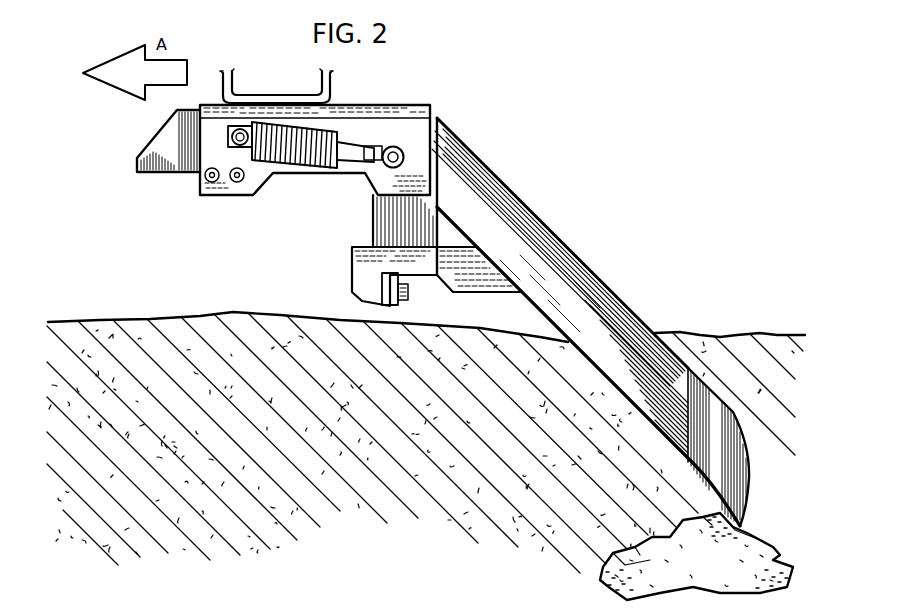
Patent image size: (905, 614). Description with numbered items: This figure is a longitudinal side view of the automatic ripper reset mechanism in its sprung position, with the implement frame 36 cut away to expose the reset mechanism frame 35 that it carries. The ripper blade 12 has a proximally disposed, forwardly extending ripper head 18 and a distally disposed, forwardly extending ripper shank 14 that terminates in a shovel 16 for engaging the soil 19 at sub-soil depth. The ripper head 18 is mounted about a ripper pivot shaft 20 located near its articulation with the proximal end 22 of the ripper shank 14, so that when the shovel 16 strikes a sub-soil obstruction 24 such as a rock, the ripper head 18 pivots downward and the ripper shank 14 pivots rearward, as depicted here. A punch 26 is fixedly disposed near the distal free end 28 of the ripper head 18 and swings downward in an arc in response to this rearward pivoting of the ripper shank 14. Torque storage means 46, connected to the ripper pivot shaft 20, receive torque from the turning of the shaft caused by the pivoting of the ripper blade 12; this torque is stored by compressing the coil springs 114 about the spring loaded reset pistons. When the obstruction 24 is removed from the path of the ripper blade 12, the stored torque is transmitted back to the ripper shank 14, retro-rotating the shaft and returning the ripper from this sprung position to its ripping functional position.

The ripper blade 12 is at (541, 203).
The ripper shank 14 is at (603, 308).
The shovel 16 is at (713, 457).
The ripper head 18 is at (387, 213).
The soil 19 is at (387, 477).
The ripper pivot shaft 20 is at (402, 150).
The proximal end of ripper shank 22 is at (477, 168).
The sub-soil obstruction 24 is at (697, 572).
The punch 26 is at (394, 303).
The distal free end of ripper head 28 is at (368, 260).
The reset mechanism frame 35 is at (370, 130).
The implement frame 36 is at (332, 84).
The torque storage means 46 is at (263, 163).
The coil springs 114 is at (310, 155).